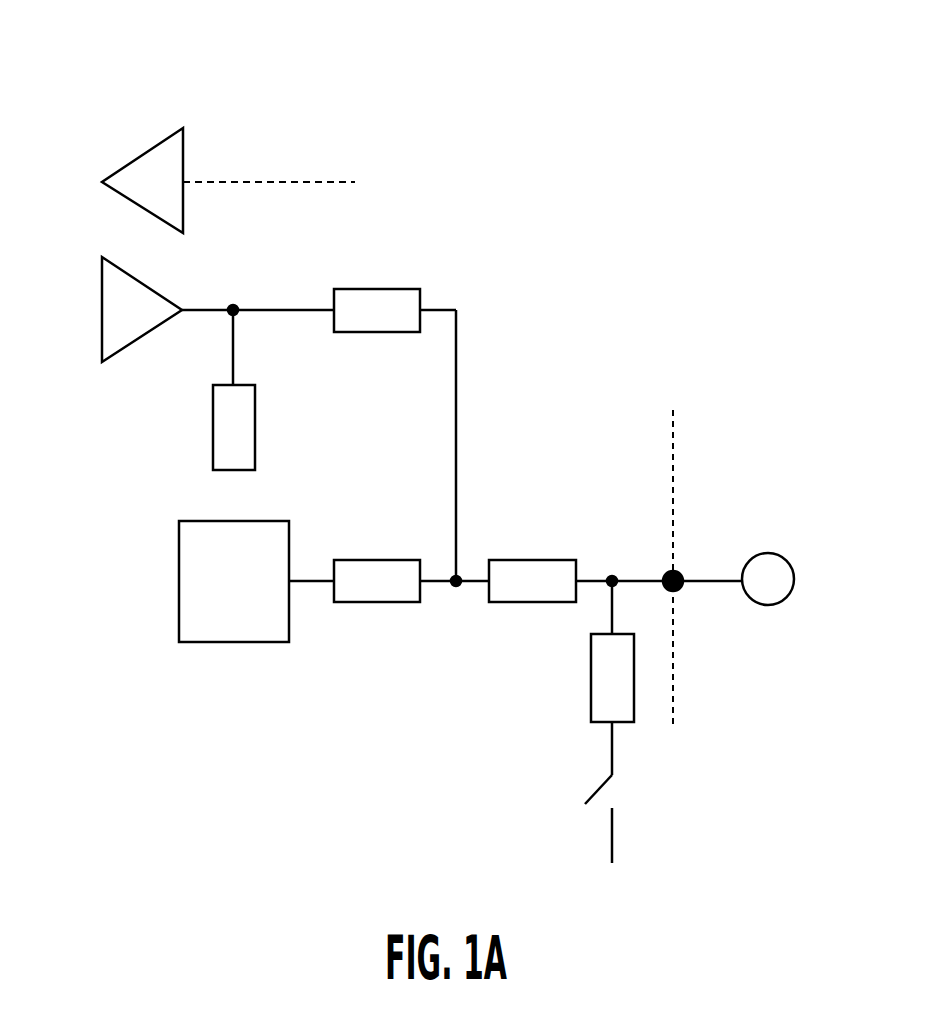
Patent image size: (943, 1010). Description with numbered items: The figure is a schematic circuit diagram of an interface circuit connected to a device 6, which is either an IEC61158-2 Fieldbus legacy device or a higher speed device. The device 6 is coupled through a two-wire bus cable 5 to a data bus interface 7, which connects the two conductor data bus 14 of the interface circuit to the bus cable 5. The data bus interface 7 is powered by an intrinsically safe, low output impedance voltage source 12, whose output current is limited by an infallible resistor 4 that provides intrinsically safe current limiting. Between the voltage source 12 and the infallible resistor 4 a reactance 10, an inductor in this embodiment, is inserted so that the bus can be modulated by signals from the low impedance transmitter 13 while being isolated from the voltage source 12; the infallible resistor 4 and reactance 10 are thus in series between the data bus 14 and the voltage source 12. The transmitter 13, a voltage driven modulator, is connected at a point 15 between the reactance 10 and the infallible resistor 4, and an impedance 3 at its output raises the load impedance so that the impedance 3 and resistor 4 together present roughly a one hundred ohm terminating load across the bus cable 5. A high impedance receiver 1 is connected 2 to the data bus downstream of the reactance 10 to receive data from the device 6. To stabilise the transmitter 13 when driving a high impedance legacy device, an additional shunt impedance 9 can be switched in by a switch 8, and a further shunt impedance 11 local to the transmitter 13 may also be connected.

The high impedance receiver 1 is at (147, 173).
The receiver connection 2 is at (297, 181).
The impedance 3 is at (385, 289).
The infallible resistor 4 is at (542, 560).
The bus cable 5 is at (715, 580).
The device 6 is at (765, 590).
The data bus interface 7 is at (678, 572).
The switch 8 is at (596, 790).
The additional shunt impedance 9 is at (590, 705).
The reactance 10 is at (355, 560).
The shunt impedance 11 is at (247, 405).
The voltage source 12 is at (222, 625).
The low impedance transmitter 13 is at (122, 335).
The data bus 14 is at (638, 580).
The point 15 is at (477, 585).